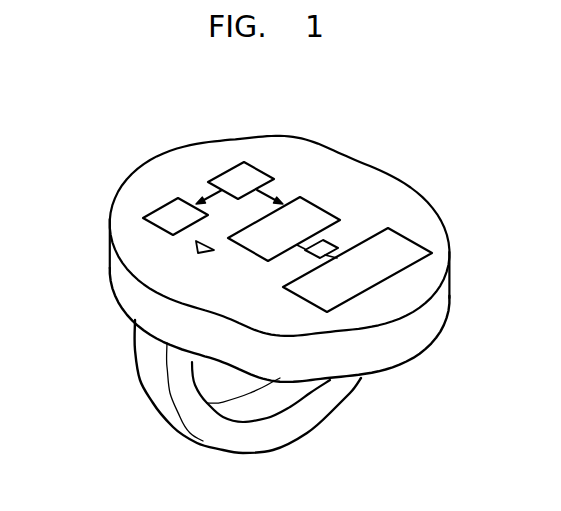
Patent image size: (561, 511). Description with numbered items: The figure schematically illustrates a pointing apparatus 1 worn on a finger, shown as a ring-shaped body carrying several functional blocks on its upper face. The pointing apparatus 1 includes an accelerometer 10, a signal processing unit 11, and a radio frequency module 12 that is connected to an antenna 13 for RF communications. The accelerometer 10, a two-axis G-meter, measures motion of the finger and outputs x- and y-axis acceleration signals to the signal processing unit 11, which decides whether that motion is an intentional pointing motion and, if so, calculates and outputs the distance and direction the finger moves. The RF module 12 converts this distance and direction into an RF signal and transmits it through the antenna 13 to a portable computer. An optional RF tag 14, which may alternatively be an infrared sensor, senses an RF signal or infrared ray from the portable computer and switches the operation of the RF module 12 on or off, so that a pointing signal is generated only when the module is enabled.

The pointing apparatus 1 is at (426, 110).
The accelerometer 10 is at (172, 210).
The signal processing unit 11 is at (267, 196).
The RF module 12 is at (313, 210).
The antenna 13 is at (197, 247).
The RF tag 14 is at (403, 247).